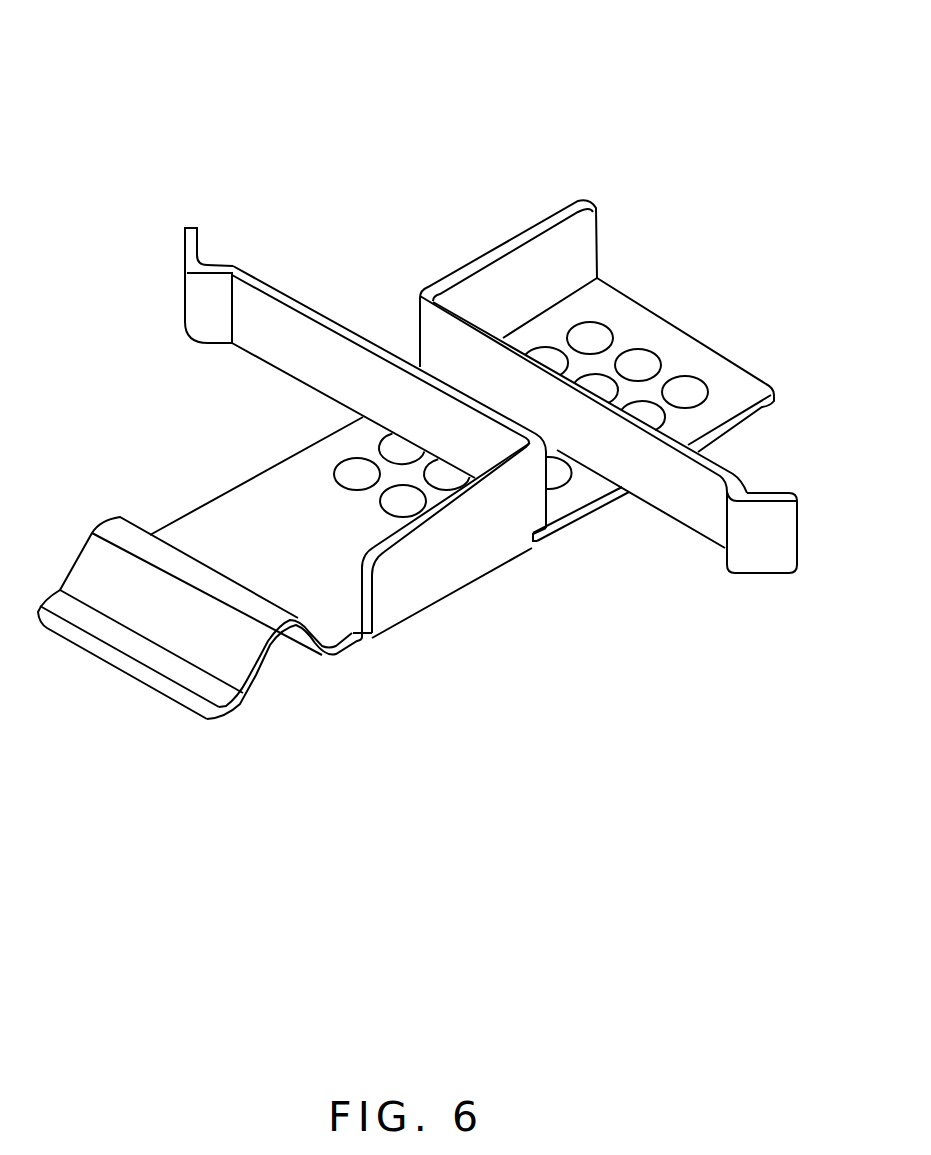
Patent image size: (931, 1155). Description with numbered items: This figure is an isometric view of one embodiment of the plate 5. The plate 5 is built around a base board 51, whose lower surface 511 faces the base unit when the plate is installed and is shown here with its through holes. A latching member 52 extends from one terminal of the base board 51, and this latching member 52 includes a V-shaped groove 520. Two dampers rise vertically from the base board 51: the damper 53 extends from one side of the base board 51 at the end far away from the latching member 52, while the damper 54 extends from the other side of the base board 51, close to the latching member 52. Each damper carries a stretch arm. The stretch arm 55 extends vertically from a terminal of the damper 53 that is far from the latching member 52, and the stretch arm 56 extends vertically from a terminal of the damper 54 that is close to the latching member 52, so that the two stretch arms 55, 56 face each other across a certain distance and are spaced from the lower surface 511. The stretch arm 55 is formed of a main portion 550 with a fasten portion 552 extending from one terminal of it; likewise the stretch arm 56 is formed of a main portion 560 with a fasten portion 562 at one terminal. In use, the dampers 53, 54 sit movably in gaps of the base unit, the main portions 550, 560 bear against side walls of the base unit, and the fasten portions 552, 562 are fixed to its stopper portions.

The plate 5 is at (397, 40).
The base board 51 is at (735, 382).
The lower surface 511 is at (642, 330).
The latching member 52 is at (168, 678).
The V-shaped groove 520 is at (296, 665).
The damper 53 is at (533, 248).
The damper 54 is at (440, 580).
The stretch arm 55 is at (788, 640).
The main portion 550 is at (690, 517).
The fasten portion 552 is at (770, 553).
The stretch arm 56 is at (338, 196).
The main portion 560 is at (250, 296).
The fasten portion 562 is at (192, 244).